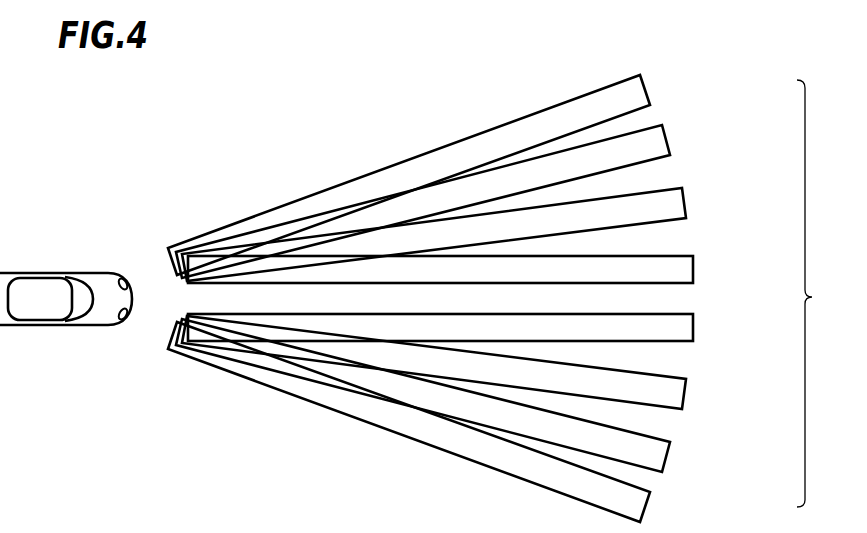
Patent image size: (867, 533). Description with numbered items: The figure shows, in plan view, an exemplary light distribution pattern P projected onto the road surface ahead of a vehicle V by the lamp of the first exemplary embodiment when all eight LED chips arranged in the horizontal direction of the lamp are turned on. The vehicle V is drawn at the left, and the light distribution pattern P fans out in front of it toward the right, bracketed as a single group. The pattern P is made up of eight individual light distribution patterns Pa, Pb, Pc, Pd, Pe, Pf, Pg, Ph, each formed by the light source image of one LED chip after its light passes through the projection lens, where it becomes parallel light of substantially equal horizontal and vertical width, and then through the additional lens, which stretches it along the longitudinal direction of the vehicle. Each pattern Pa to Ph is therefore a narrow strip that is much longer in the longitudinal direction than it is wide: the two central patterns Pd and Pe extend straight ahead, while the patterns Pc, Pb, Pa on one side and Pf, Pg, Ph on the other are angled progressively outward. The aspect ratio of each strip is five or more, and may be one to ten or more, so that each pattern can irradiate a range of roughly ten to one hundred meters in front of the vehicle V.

The vehicle V is at (63, 325).
The light distribution pattern P is at (815, 293).
The light distribution pattern Pa is at (635, 505).
The light distribution pattern Pb is at (658, 455).
The light distribution pattern Pc is at (675, 392).
The light distribution pattern Pd is at (682, 332).
The light distribution pattern Pe is at (683, 267).
The light distribution pattern Pf is at (678, 202).
The light distribution pattern Pg is at (660, 142).
The light distribution pattern Ph is at (635, 97).